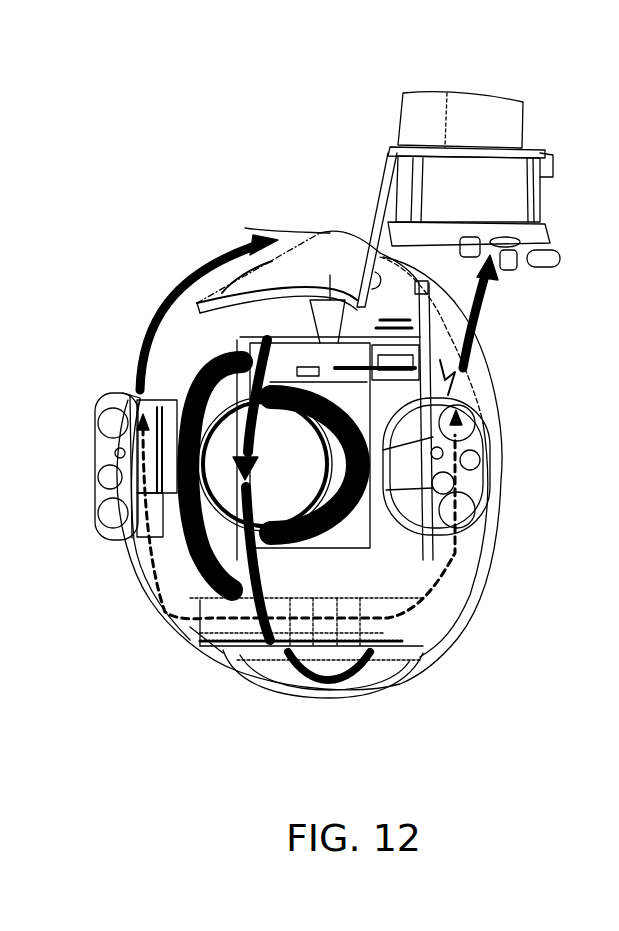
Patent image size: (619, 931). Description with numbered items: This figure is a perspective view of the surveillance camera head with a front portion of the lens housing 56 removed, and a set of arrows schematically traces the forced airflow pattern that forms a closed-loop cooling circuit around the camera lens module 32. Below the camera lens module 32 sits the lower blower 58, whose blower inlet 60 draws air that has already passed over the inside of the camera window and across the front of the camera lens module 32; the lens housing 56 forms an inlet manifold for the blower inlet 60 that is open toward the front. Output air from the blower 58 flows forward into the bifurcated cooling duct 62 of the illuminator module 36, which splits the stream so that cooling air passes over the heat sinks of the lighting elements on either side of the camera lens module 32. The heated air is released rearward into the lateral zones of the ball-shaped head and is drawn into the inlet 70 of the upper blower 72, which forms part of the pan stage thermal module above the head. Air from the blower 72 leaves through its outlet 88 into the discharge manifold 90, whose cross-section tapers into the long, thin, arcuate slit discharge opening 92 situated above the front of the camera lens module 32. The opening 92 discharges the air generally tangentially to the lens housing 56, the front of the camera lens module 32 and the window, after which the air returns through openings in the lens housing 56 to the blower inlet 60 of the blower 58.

The camera lens module 32 is at (223, 433).
The illuminator module 36 is at (96, 453).
The lens housing 56 is at (457, 623).
The blower 58 is at (260, 680).
The blower inlet 60 is at (327, 687).
The cooling duct 62 is at (152, 612).
The inlet 70 is at (475, 90).
The blower 72 is at (507, 193).
The outlet 88 is at (392, 178).
The discharge manifold 90 is at (330, 233).
The slit discharge opening 92 is at (223, 297).